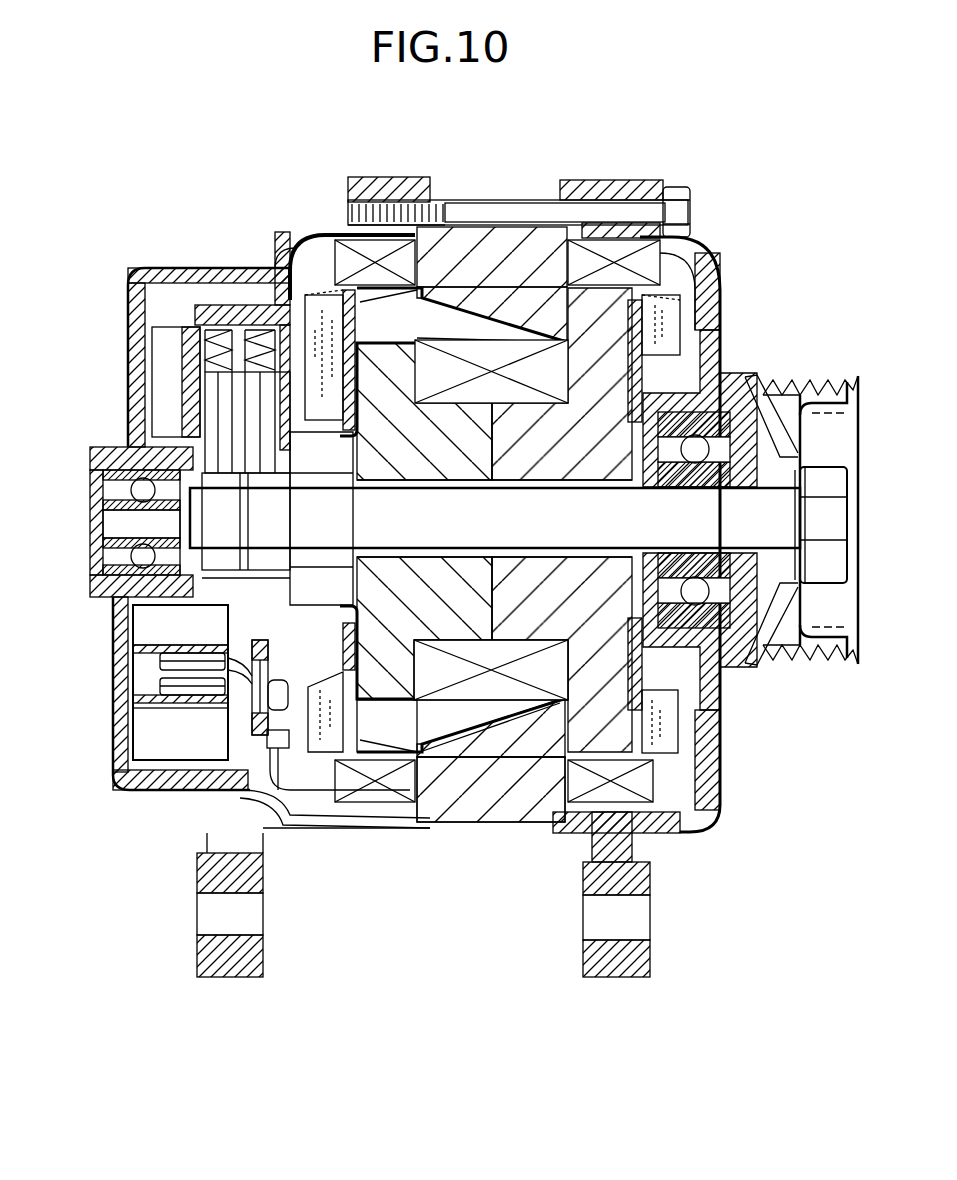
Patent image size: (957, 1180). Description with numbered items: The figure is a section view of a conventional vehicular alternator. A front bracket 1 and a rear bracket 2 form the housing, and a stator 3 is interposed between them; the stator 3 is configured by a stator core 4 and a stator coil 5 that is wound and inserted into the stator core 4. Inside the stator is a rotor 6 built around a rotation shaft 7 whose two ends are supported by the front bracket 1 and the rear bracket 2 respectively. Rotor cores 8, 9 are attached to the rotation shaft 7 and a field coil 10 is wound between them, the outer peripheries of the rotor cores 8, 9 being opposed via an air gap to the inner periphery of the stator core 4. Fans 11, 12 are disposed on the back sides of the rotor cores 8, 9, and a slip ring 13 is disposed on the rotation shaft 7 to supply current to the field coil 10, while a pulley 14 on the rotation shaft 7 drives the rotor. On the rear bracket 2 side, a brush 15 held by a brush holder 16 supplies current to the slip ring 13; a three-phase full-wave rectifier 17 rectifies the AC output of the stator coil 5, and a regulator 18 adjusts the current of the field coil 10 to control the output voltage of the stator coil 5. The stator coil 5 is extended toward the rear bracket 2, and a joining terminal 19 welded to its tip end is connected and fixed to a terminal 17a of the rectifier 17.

The front bracket 1 is at (700, 742).
The rear bracket 2 is at (115, 795).
The stator 3 is at (510, 225).
The stator core 4 is at (472, 235).
The stator coil 5 is at (328, 292).
The rotor 6 is at (540, 303).
The rotation shaft 7 is at (783, 514).
The rotor core 8 is at (390, 740).
The rotor core 9 is at (472, 745).
The field coil 10 is at (500, 693).
The fan 11 is at (660, 320).
The fan 12 is at (330, 310).
The slip ring 13 is at (220, 508).
The pulley 14 is at (807, 377).
The brush 15 is at (220, 418).
The brush holder 16 is at (215, 305).
The three-phase full-wave rectifier 17 is at (170, 683).
The terminal of the rectifier 17a is at (125, 622).
The regulator 18 is at (165, 355).
The joining terminal 19 is at (300, 775).